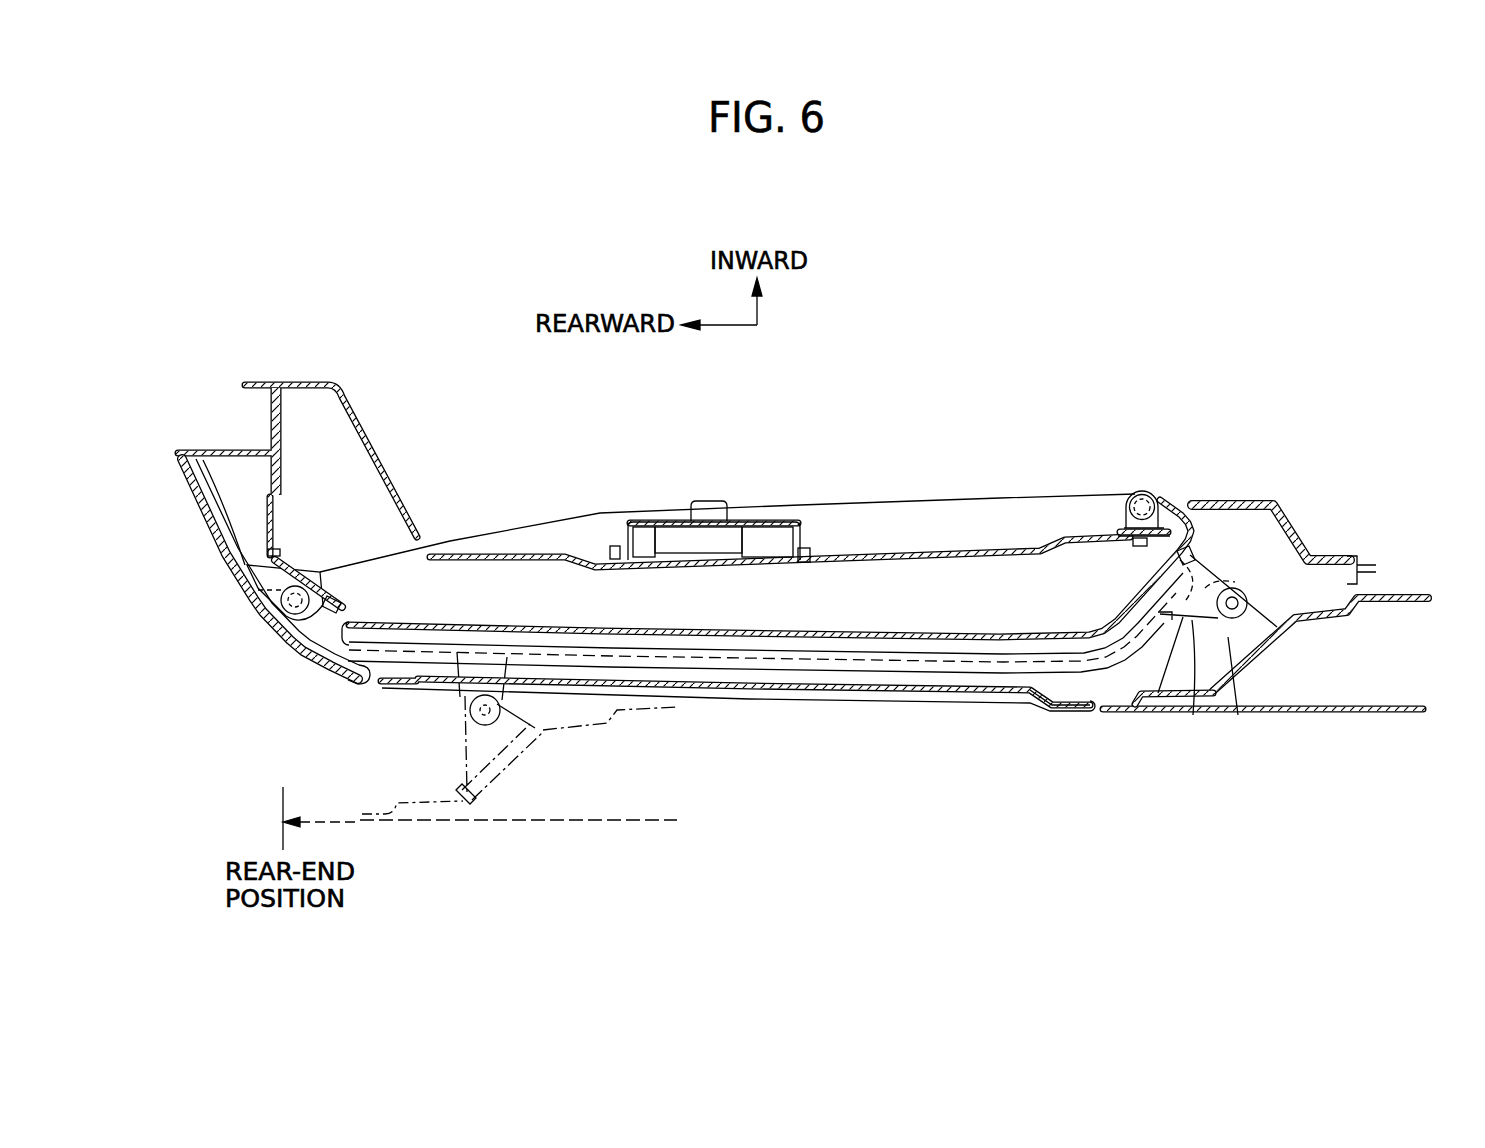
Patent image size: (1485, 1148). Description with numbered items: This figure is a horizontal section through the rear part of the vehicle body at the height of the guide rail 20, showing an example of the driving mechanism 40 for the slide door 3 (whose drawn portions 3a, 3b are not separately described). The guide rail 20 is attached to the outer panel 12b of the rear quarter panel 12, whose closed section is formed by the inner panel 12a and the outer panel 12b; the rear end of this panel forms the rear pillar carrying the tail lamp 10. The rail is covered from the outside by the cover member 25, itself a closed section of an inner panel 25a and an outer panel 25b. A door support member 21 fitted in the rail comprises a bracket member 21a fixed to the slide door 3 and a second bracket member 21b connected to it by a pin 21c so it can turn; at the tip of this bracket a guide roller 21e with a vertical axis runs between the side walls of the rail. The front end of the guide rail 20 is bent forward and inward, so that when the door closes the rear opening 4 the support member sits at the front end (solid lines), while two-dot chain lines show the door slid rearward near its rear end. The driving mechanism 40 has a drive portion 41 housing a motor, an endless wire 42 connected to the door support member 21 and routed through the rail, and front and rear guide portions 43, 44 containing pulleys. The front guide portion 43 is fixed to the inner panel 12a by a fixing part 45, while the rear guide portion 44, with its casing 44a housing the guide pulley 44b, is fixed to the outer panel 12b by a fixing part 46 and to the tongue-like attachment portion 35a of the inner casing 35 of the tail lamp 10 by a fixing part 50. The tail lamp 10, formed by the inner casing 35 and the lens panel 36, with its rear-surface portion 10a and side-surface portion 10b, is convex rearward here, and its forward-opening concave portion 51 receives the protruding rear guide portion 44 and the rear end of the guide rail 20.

The slide door 3 is at (891, 787).
The side member upper portion 3a is at (1328, 620).
The side member lower portion 3b is at (1338, 713).
The rear opening 4 is at (1390, 575).
The tail lamp 10 is at (263, 569).
The rear-surface portion 10a is at (205, 528).
The side-surface portion 10b is at (340, 676).
The rear quarter panel 12 is at (766, 638).
The inner panel 12a is at (985, 560).
The outer panel 12b is at (805, 656).
The guide rail 20 is at (743, 674).
The door support member 21 is at (860, 679).
The bracket member 21a is at (1240, 714).
The bracket member 21b is at (1158, 698).
The pin 21c is at (1193, 718).
The guide roller 21e is at (1192, 572).
The cover member 25 is at (738, 743).
The inner panel 25a is at (965, 692).
The outer panel 25b is at (895, 703).
The inner casing 35 is at (228, 490).
The attachment portion 35a is at (266, 546).
The lens panel 36 is at (243, 637).
The driving mechanism 40 is at (711, 495).
The drive portion 41 is at (678, 541).
The wire 42 is at (883, 503).
The front guide portion 43 is at (1148, 495).
The rear guide portion 44 is at (274, 652).
The casing 44a is at (280, 642).
The guide pulley 44b is at (268, 598).
The fixing part 45 is at (1125, 531).
The fixing part 46 is at (340, 598).
The fixing part 50 is at (290, 574).
The concave portion 51 is at (288, 608).